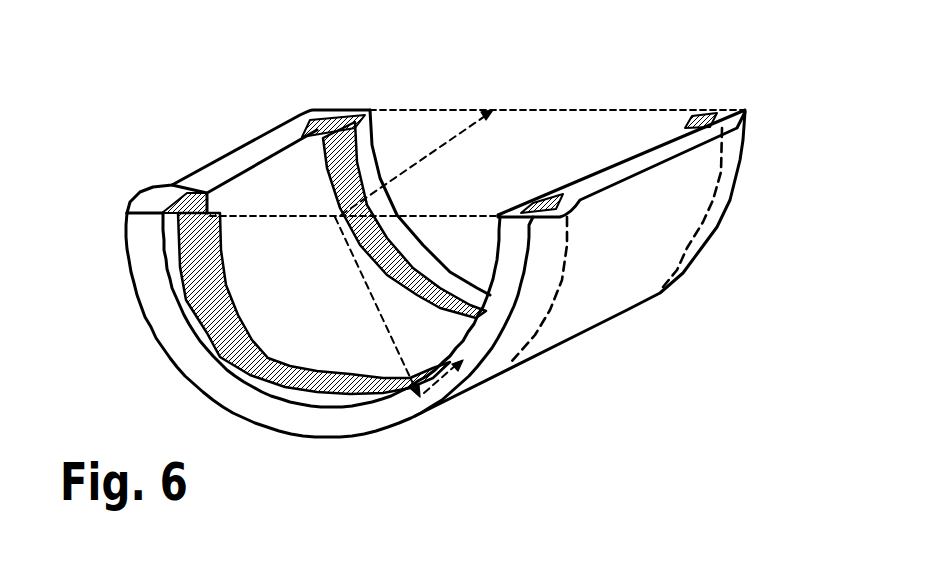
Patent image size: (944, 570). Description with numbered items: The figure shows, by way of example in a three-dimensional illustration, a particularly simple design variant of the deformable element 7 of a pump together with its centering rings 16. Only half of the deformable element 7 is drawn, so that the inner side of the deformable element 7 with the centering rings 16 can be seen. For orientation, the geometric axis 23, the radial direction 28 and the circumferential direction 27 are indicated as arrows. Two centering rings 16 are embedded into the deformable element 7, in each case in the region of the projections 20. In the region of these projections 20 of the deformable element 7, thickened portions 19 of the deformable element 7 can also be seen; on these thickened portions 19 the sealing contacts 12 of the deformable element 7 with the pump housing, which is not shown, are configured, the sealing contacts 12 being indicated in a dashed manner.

The deformable element 7 is at (201, 122).
The sealing contact 12 is at (723, 157).
The centering ring 16 is at (177, 253).
The thickened portion 19 is at (310, 109).
The projection 20 is at (171, 353).
The geometric axis 23 is at (433, 147).
The circumferential direction 27 is at (443, 397).
The radial direction 28 is at (362, 282).